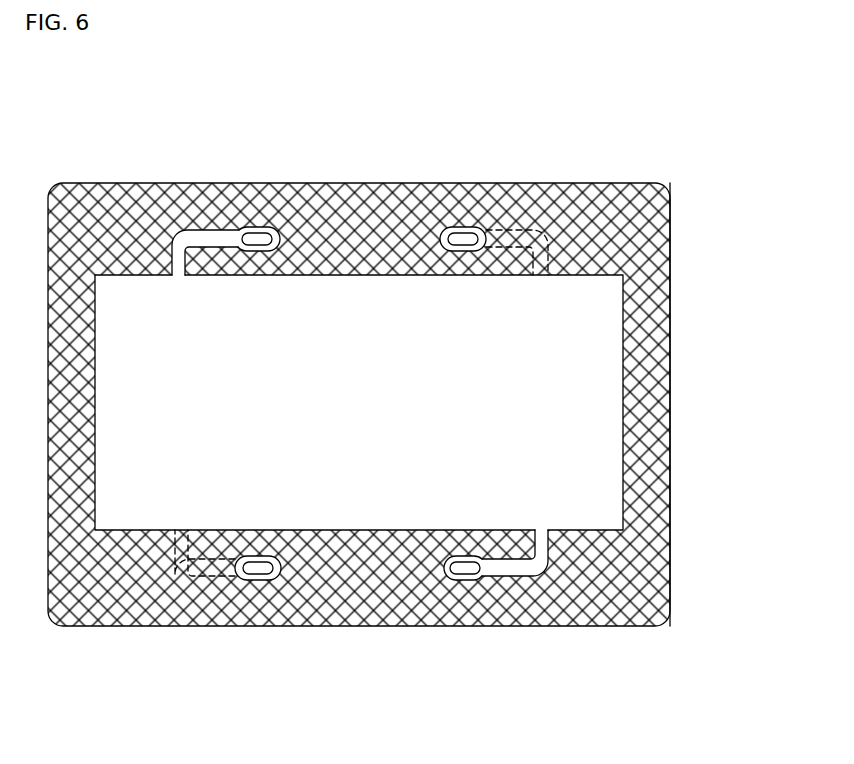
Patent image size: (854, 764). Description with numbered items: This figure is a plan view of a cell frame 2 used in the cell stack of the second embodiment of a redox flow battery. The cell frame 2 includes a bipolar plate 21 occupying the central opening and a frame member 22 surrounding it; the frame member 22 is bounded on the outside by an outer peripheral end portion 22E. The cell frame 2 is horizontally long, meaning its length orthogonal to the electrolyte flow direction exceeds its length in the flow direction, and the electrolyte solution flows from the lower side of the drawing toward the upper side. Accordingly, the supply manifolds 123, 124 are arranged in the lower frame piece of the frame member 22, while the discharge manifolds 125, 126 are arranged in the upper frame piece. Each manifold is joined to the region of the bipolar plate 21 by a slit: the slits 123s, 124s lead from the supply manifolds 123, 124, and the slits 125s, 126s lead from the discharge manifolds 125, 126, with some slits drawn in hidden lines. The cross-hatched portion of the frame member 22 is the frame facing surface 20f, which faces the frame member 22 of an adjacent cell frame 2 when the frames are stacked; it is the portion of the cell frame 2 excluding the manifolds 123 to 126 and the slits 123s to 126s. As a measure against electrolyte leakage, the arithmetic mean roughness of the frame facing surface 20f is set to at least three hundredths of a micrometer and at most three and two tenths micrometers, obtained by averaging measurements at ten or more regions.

The cell frame 2 is at (359, 347).
The frame facing surface 20f is at (122, 192).
The bipolar plate 21 is at (396, 305).
The frame member 22 is at (340, 186).
The outer peripheral end portion 22E is at (670, 235).
The supply manifold 123 is at (463, 581).
The slit 123s is at (515, 582).
The supply manifold 124 is at (258, 581).
The slit 124s is at (190, 578).
The discharge manifold 125 is at (264, 229).
The slit 125s is at (196, 238).
The discharge manifold 126 is at (463, 229).
The slit 126s is at (533, 230).